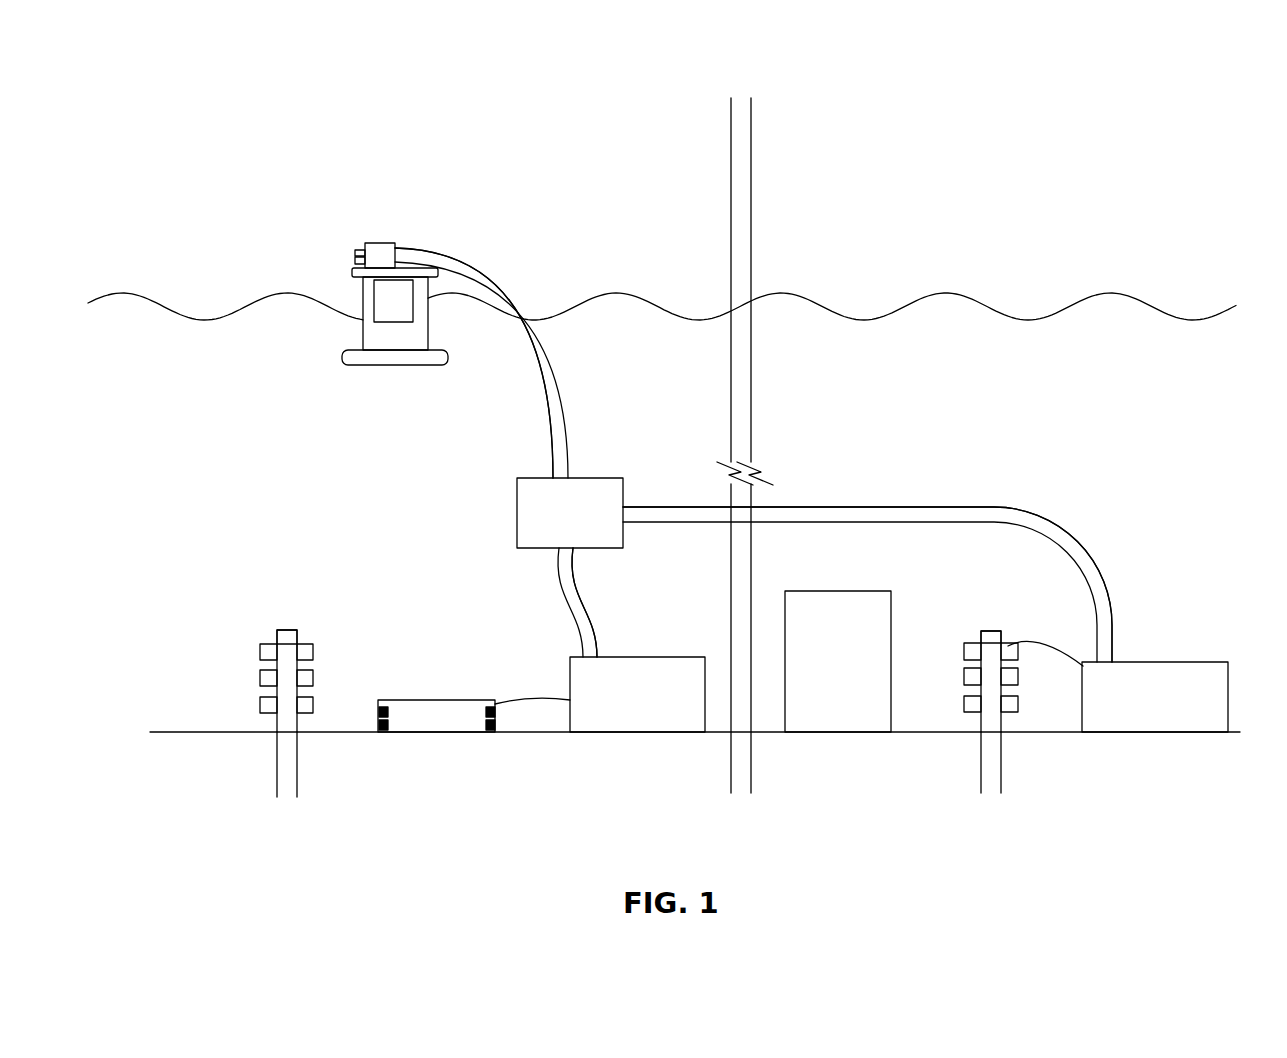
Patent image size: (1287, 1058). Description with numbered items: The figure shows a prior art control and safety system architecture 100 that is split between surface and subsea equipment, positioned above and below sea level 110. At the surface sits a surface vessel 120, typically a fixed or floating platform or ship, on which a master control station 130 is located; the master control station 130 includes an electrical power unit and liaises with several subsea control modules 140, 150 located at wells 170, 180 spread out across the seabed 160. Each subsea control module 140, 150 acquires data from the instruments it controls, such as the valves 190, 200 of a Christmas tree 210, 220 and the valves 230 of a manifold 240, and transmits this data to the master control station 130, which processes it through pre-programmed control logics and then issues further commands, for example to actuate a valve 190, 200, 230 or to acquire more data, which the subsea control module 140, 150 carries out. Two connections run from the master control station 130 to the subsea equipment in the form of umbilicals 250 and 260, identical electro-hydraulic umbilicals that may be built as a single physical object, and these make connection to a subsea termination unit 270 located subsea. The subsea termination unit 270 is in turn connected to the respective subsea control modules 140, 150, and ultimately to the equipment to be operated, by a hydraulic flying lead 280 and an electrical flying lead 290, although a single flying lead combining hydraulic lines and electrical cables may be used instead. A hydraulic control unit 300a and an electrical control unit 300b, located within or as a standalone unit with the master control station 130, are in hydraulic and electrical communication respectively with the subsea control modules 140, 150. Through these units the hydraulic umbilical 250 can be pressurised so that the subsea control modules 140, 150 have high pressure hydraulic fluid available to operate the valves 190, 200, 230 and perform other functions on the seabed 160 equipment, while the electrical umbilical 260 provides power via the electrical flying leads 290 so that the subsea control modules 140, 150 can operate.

The control and safety system architecture 100 is at (967, 148).
The sea level 110 is at (1155, 310).
The surface vessel 120 is at (438, 365).
The master control station 130 is at (382, 243).
The subsea control module 140 is at (612, 657).
The subsea control module 150 is at (1151, 662).
The seabed 160 is at (178, 732).
The well 170 is at (277, 762).
The well 180 is at (1001, 755).
The valve 190 is at (300, 645).
The valve 200 is at (1008, 646).
The Christmas tree 210 is at (287, 630).
The Christmas tree 220 is at (991, 631).
The valves 230 is at (488, 707).
The manifold 240 is at (420, 700).
The umbilical 250 is at (492, 287).
The umbilical 260 is at (510, 290).
The subsea termination unit 270 is at (612, 478).
The hydraulic flying lead 280 is at (862, 519).
The electrical flying lead 290 is at (916, 507).
The hydraulic control unit 300a is at (357, 252).
The electrical control unit 300b is at (355, 259).